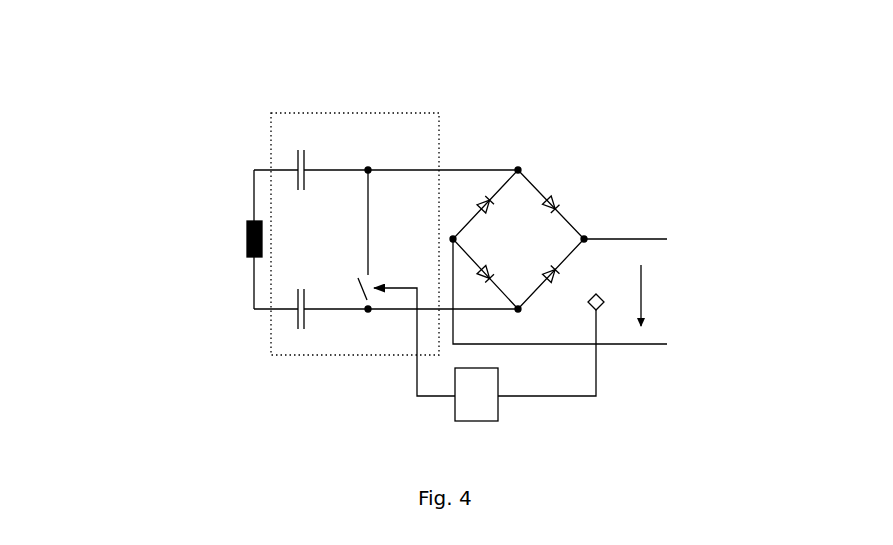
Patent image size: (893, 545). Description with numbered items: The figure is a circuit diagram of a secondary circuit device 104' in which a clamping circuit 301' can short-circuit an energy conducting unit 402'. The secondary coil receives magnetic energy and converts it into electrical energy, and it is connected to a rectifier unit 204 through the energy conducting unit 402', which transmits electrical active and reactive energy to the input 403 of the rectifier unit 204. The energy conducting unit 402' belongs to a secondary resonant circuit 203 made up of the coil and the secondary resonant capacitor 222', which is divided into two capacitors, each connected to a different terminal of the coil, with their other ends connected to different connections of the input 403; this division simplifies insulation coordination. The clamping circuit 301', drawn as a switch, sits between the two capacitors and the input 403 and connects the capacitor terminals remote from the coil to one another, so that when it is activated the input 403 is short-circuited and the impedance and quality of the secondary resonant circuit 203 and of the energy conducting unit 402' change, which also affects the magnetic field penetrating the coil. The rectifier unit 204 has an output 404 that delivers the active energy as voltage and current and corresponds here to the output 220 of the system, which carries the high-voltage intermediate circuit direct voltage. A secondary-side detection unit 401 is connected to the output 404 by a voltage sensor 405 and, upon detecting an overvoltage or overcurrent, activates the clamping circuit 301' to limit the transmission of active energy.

The secondary circuit device 104' is at (210, 164).
The energy conducting unit 402' is at (365, 192).
The secondary resonant capacitor 222' is at (329, 122).
The secondary resonant circuit 203 is at (332, 330).
The clamping circuit 301' is at (404, 239).
The input of the rectifier unit 403 is at (502, 155).
The rectifier unit 204 is at (533, 187).
The output of the rectifier unit 404 is at (615, 193).
The output of the system 220 is at (693, 237).
The voltage sensor 405 is at (598, 293).
The secondary-side detection unit 401 is at (498, 410).